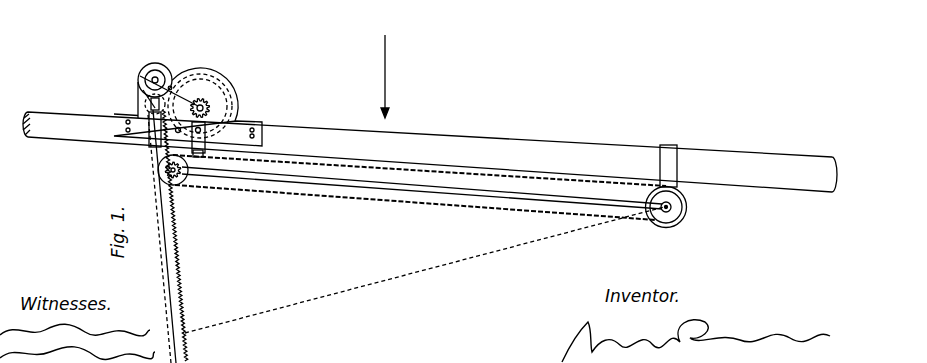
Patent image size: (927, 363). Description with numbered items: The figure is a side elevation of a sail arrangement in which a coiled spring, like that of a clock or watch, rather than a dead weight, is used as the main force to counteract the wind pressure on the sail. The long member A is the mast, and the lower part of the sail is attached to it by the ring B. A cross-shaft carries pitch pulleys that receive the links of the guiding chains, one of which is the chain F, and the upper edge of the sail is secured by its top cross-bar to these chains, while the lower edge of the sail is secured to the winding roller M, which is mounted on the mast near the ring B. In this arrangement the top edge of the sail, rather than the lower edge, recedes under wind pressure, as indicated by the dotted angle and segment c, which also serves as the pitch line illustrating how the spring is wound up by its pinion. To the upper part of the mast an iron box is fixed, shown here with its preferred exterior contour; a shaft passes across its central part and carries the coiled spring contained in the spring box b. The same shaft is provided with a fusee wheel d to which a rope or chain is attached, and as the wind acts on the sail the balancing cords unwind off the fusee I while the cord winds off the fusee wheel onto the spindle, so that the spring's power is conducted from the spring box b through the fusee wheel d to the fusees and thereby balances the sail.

The mast A is at (430, 152).
The ring B is at (666, 166).
The winding roller M is at (672, 207).
The guiding chain F is at (422, 195).
The pitch line c is at (424, 272).
The fusee wheel d is at (196, 101).
The fusee I is at (163, 85).
The spring box b is at (168, 85).
The casing Q' is at (188, 89).